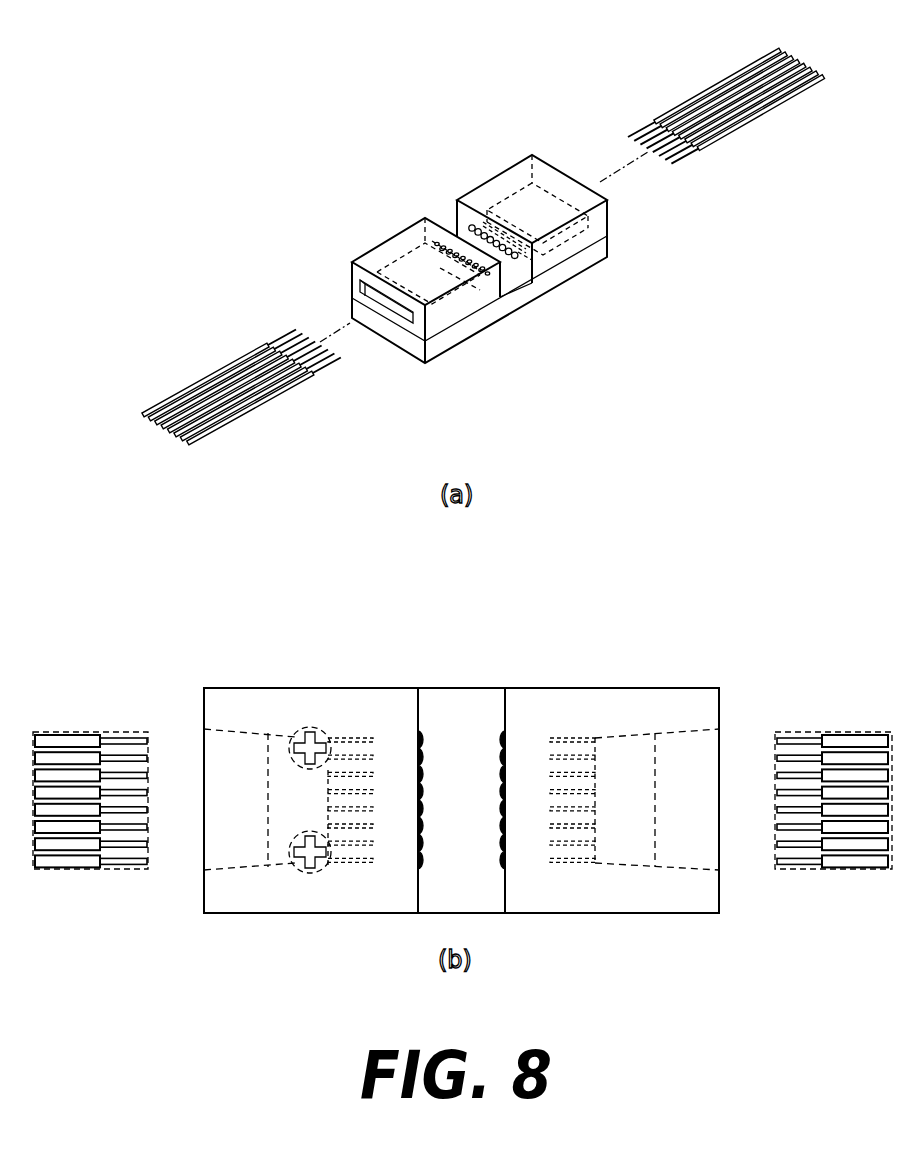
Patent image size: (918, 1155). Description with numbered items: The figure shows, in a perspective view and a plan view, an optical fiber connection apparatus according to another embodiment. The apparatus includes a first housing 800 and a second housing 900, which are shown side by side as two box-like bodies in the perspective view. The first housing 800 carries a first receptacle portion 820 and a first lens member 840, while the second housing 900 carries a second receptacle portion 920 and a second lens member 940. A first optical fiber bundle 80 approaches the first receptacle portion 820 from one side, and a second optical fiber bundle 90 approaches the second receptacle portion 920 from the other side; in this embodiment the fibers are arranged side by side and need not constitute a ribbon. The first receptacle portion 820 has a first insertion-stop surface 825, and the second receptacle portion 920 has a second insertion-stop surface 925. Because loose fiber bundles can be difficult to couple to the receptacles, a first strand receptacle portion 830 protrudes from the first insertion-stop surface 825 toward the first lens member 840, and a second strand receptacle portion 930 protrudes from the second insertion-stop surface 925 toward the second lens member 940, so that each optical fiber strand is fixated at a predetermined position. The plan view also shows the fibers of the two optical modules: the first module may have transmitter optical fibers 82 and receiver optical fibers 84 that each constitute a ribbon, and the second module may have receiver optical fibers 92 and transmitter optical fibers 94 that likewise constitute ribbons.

The first optical fiber bundle 80 is at (728, 75).
The second optical fiber bundle 90 is at (220, 368).
The first housing 800 is at (577, 221).
The first receptacle portion 820 is at (538, 177).
The first insertion-stop surface 825 is at (530, 250).
The first lens member 840 is at (472, 225).
The second housing 900 is at (476, 252).
The second receptacle portion 920 is at (377, 270).
The second insertion-stop surface 925 is at (463, 280).
The second lens member 940 is at (437, 245).
The transmitter optical fibers 82 is at (833, 801).
The receiver optical fibers 84 is at (835, 732).
The receiver optical fibers 92 is at (90, 800).
The transmitter optical fibers 94 is at (88, 732).
The first strand receptacle portion 830 is at (578, 738).
The second strand receptacle portion 930 is at (352, 738).